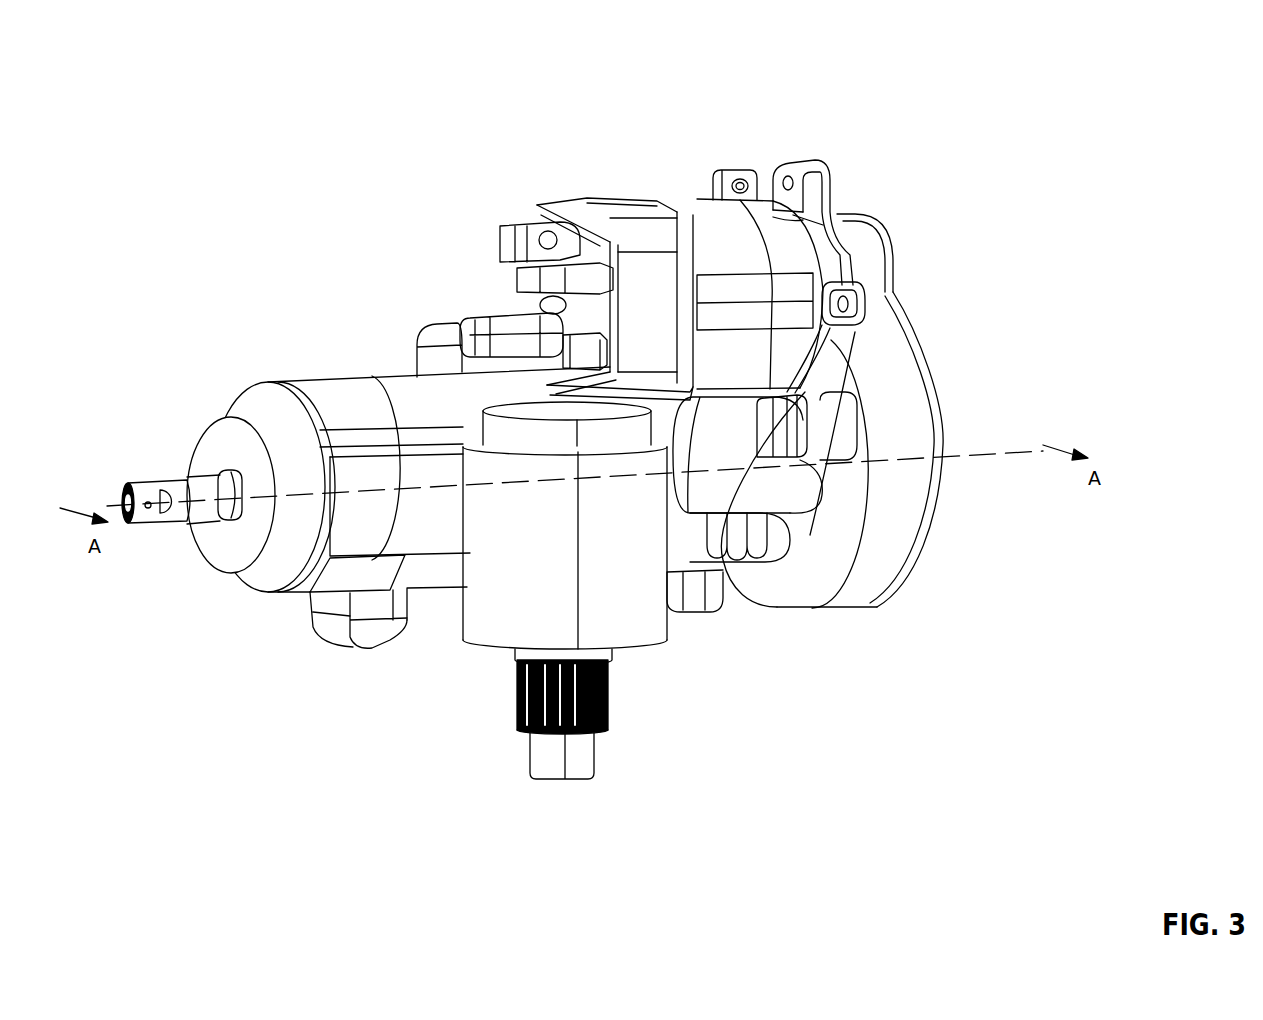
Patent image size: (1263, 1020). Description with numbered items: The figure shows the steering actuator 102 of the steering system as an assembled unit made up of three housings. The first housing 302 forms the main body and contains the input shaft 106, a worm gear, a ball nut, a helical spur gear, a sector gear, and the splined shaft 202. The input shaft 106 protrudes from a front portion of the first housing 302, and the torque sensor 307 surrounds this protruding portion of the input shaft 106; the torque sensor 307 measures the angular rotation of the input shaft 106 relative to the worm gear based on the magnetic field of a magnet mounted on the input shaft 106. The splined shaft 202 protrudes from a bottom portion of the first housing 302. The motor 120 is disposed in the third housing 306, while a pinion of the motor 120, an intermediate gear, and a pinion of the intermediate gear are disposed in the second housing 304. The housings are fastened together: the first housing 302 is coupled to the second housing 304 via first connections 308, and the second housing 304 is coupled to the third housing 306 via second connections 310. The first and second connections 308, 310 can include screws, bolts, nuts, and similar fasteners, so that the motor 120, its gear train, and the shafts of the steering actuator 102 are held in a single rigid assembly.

The steering actuator 102 is at (915, 43).
The input shaft 106 is at (198, 540).
The motor 120 is at (698, 196).
The splined shaft 202 is at (607, 690).
The first housing 302 is at (320, 378).
The second housing 304 is at (942, 420).
The third housing 306 is at (551, 205).
The torque sensor 307 is at (233, 568).
The first connections 308 is at (797, 473).
The second connections 310 is at (825, 167).